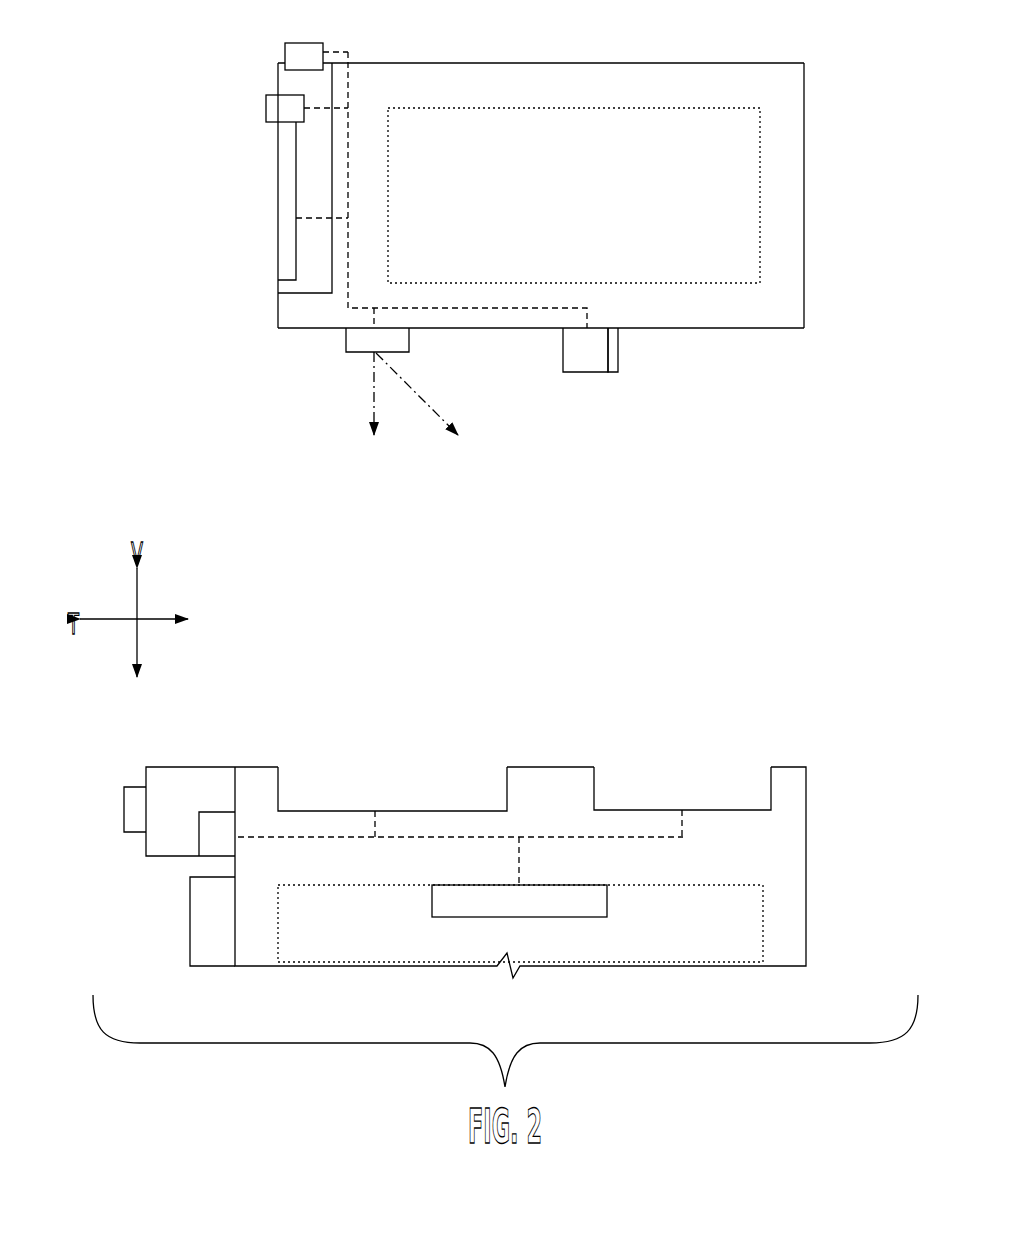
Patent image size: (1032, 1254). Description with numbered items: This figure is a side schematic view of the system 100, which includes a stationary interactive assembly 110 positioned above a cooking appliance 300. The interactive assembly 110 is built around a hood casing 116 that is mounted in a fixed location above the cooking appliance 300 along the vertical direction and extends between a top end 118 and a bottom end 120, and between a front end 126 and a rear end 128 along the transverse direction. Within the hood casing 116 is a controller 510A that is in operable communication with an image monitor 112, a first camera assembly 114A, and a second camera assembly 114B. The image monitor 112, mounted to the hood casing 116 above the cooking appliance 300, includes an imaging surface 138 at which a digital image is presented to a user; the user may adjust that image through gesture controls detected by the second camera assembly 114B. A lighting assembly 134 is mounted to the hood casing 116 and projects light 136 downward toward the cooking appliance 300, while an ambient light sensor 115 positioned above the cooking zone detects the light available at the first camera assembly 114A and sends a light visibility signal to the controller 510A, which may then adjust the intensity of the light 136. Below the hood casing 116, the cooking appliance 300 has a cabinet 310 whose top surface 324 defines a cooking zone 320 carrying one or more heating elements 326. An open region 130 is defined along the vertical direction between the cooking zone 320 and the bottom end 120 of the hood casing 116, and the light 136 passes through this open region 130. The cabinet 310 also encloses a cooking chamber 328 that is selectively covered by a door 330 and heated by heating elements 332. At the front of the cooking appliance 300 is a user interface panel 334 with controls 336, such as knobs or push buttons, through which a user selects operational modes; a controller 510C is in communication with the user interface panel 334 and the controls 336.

The system 100 is at (108, 178).
The interactive assembly 110 is at (825, 158).
The image monitor 112 is at (278, 207).
The first camera assembly 114A is at (587, 358).
The second camera assembly 114B is at (266, 112).
The ambient light sensor 115 is at (618, 352).
The hood casing 116 is at (773, 77).
The top end 118 is at (690, 63).
The bottom end 120 is at (718, 330).
The front end 126 is at (278, 313).
The rear end 128 is at (806, 300).
The open region 130 is at (570, 710).
The lighting assembly 134 is at (346, 331).
The light 136 is at (418, 390).
The imaging surface 138 is at (278, 250).
The controller 510A is at (302, 53).
The cooking appliance 300 is at (835, 855).
The cabinet 310 is at (796, 943).
The cooking zone 320 is at (435, 748).
The top surface 324 is at (548, 767).
The heating elements 326 is at (318, 778).
The cooking chamber 328 is at (663, 952).
The door 330 is at (200, 940).
The heating elements 332 is at (440, 903).
The user interface panel 334 is at (146, 785).
The controls 336 is at (130, 818).
The controller 510C is at (210, 843).